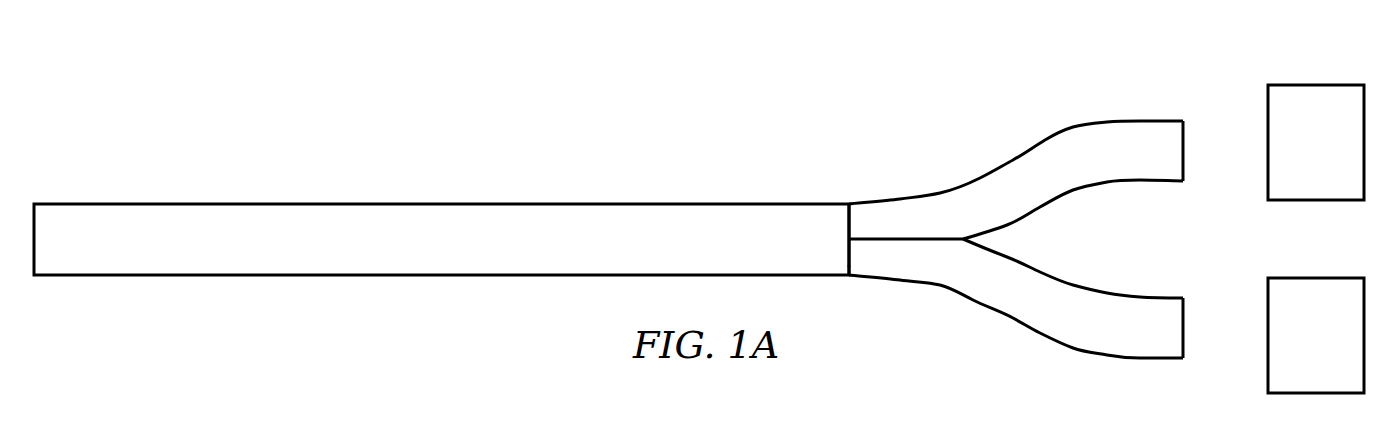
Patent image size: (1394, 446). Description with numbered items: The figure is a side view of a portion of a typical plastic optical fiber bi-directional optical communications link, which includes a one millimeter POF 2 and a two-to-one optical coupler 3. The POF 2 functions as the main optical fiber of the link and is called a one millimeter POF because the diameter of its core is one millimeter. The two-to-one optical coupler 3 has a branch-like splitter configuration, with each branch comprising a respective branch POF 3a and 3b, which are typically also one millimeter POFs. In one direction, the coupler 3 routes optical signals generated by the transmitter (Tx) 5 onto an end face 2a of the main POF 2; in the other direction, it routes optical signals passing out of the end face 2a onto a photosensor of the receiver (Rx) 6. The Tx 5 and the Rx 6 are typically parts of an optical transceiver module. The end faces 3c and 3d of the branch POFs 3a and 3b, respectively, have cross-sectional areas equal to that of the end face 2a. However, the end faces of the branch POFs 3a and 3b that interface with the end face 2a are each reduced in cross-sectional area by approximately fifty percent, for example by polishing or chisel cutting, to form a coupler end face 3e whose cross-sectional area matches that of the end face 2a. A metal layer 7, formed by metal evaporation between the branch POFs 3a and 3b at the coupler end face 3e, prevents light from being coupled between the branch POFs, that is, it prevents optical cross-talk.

The POF 2 is at (562, 145).
The end face 2a is at (851, 217).
The 2-to-1 optical coupler 3 is at (1008, 195).
The branch POF 3a is at (1013, 160).
The branch POF 3b is at (1012, 320).
The end face 3c is at (1184, 142).
The end face 3d is at (1184, 322).
The coupler end face 3e is at (849, 265).
The transmitter (Tx) 5 is at (1316, 142).
The receiver (Rx) 6 is at (1316, 335).
The metal layer 7 is at (932, 237).